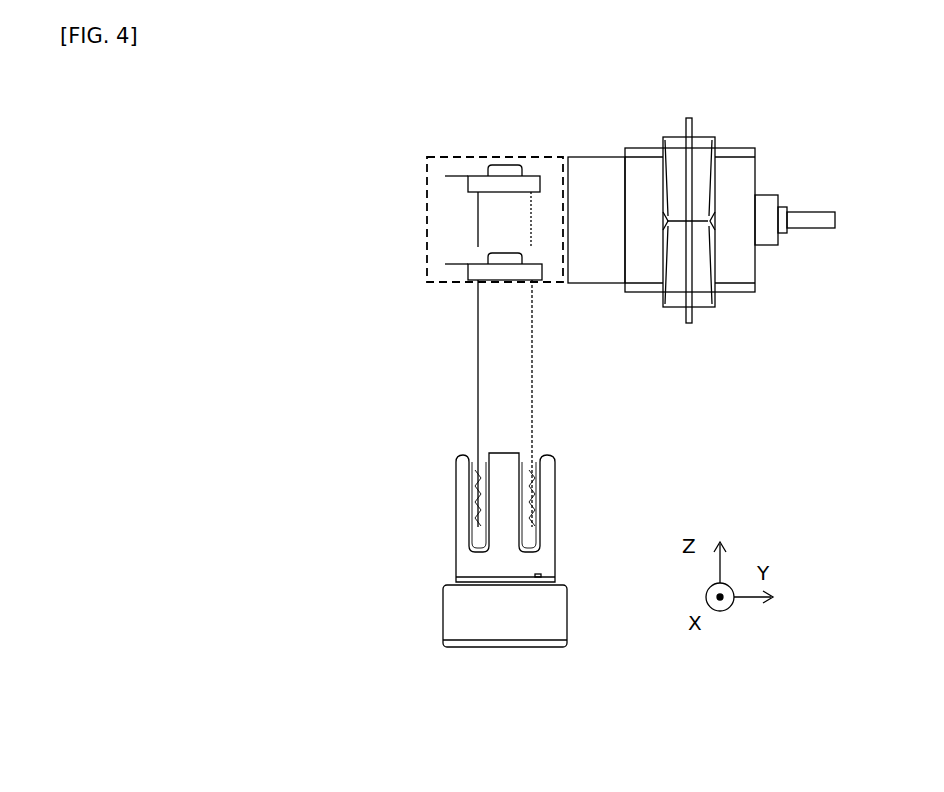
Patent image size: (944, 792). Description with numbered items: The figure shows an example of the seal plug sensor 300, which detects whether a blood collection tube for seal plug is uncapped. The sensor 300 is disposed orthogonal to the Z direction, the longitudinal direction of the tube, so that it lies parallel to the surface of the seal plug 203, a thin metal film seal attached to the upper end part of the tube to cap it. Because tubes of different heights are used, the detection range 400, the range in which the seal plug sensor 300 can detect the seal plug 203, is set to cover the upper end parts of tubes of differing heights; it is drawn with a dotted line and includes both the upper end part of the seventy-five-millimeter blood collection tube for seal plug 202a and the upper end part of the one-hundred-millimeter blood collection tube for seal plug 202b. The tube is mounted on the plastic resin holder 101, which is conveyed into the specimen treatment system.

The holder 101 is at (533, 567).
The 75-mm blood collection tube for seal plug 202a is at (508, 319).
The 100-mm blood collection tube for seal plug 202b is at (488, 213).
The seal plug 203 is at (482, 176).
The seal plug sensor 300 is at (605, 182).
The detection range 400 is at (427, 247).